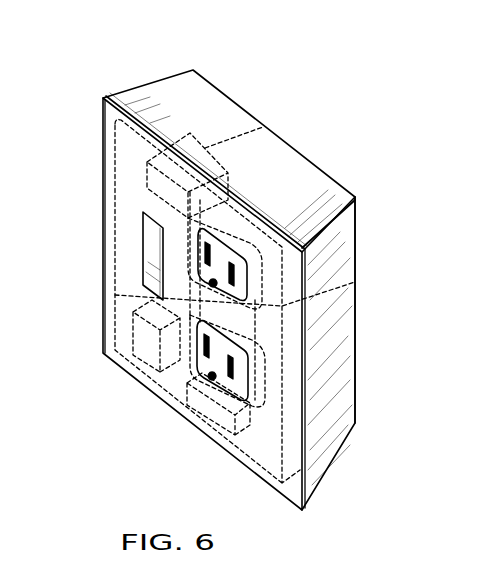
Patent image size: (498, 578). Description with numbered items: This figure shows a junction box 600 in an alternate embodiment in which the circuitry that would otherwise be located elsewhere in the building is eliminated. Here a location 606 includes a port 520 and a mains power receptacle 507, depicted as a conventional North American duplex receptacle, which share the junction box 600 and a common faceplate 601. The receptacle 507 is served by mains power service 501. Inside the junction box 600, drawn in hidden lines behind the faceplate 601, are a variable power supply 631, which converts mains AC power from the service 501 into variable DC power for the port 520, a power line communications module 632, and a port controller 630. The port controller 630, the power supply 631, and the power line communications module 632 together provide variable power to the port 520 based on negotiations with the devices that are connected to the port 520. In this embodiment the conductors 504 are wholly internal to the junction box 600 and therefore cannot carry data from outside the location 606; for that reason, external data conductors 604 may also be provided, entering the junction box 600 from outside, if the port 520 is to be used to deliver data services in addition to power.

The junction box 600 is at (193, 70).
The faceplate 601 is at (110, 98).
The external data conductors 604 is at (310, 119).
The location 606 is at (97, 132).
The port controller 630 is at (183, 135).
The power line communications module 632 is at (120, 362).
The variable power supply 631 is at (224, 440).
The conductors 504 is at (115, 295).
The port 520 is at (143, 233).
The mains power receptacle 507 is at (220, 242).
The mains power service 501 is at (352, 283).